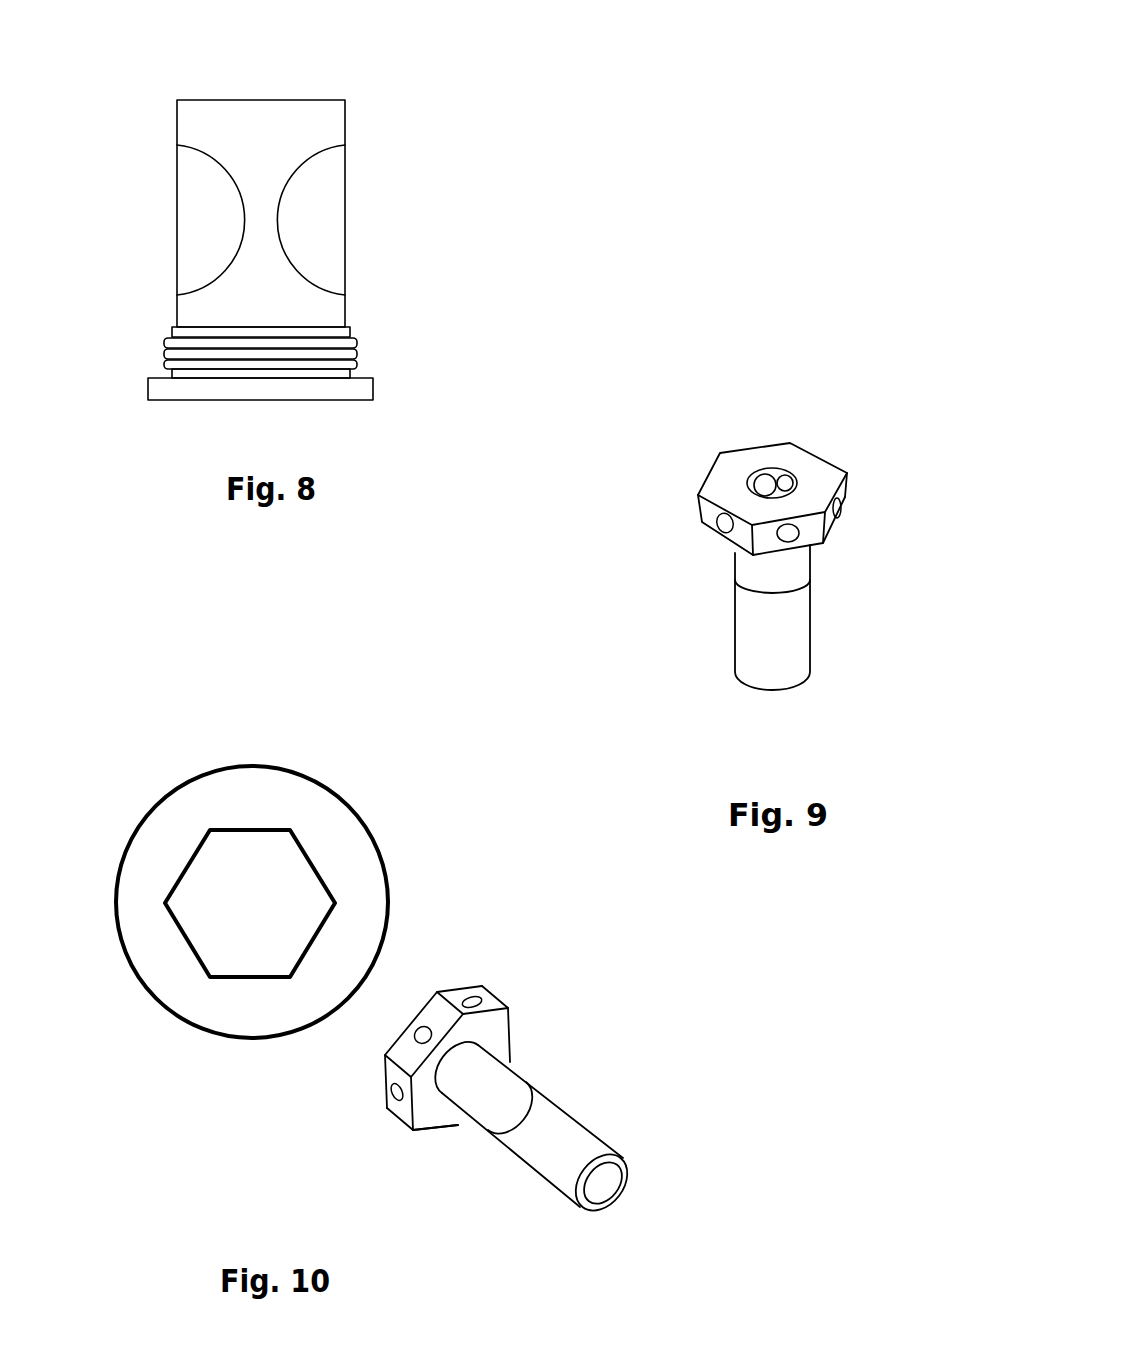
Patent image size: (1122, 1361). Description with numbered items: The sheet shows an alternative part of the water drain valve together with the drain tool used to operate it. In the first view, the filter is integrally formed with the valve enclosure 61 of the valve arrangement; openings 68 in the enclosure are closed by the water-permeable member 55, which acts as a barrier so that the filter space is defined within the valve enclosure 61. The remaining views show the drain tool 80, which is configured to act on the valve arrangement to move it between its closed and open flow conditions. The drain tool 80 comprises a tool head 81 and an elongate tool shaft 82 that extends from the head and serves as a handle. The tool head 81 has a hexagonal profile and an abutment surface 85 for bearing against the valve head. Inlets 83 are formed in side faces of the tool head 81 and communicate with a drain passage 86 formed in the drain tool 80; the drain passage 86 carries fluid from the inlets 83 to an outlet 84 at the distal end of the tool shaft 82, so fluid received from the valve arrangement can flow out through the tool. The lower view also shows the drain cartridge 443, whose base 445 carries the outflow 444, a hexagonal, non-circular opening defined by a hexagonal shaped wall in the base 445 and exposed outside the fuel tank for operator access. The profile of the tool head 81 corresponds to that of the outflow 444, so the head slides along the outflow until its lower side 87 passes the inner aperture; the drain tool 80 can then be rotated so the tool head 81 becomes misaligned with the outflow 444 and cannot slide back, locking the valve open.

In FIG. 8, the water-permeable member 55 is at (335, 255).
In FIG. 8, the valve enclosure 61 is at (215, 105).
In FIG. 8, the openings 68 is at (183, 220).
In FIG. 9, the drain tool 80 is at (770, 584).
In FIG. 10, the drain tool 80 is at (507, 1103).
In FIG. 9, the tool head 81 is at (700, 503).
In FIG. 10, the tool head 81 is at (383, 1080).
In FIG. 9, the tool shaft 82 is at (733, 630).
In FIG. 10, the tool shaft 82 is at (579, 1165).
In FIG. 10, the inlets 83 is at (480, 1000).
In FIG. 10, the outlet 84 is at (598, 1182).
In FIG. 9, the abutment surface 85 is at (820, 482).
In FIG. 10, the drain passage 86 is at (593, 1215).
In FIG. 10, the lower side 87 is at (427, 1118).
In FIG. 8, the drain cartridge 443 is at (273, 206).
In FIG. 10, the drain cartridge 443 is at (200, 854).
In FIG. 10, the outflow 444 is at (225, 921).
In FIG. 10, the base 445 is at (128, 910).